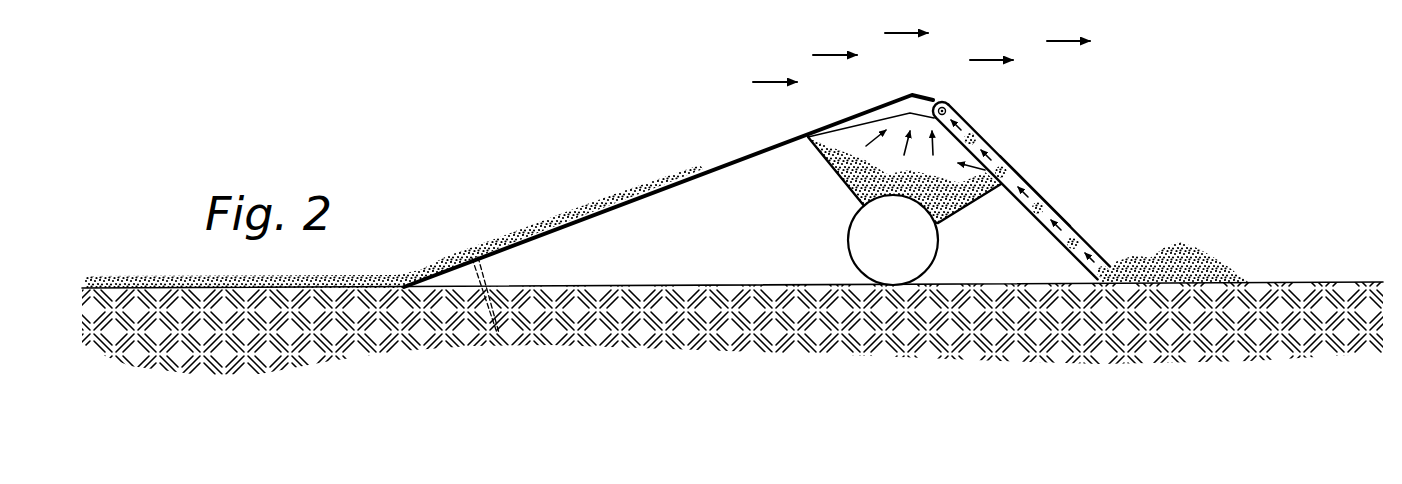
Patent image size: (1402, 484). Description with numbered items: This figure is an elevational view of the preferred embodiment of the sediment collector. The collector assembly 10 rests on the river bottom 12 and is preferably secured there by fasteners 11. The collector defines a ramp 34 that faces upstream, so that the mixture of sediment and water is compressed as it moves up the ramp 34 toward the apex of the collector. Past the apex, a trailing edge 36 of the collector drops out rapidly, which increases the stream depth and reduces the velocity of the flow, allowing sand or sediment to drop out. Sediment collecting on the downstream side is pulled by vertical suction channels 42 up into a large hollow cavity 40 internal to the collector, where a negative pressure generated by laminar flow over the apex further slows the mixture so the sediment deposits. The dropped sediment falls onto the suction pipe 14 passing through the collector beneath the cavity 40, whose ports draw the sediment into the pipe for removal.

The collector assembly 10 is at (1127, 115).
The fasteners 11 is at (482, 276).
The river bottom 12 is at (1315, 282).
The suction pipe 14 is at (896, 247).
The ramp 34 is at (748, 154).
The trailing edge 36 is at (977, 133).
The hollow cavity 40 is at (893, 148).
The vertical suction channels 42 is at (1067, 223).